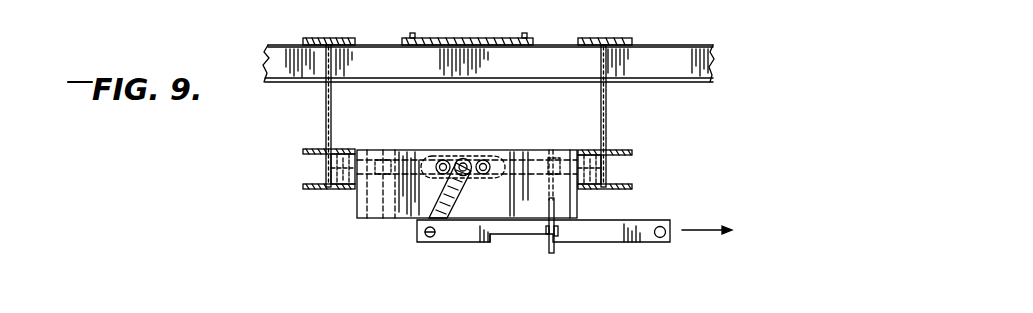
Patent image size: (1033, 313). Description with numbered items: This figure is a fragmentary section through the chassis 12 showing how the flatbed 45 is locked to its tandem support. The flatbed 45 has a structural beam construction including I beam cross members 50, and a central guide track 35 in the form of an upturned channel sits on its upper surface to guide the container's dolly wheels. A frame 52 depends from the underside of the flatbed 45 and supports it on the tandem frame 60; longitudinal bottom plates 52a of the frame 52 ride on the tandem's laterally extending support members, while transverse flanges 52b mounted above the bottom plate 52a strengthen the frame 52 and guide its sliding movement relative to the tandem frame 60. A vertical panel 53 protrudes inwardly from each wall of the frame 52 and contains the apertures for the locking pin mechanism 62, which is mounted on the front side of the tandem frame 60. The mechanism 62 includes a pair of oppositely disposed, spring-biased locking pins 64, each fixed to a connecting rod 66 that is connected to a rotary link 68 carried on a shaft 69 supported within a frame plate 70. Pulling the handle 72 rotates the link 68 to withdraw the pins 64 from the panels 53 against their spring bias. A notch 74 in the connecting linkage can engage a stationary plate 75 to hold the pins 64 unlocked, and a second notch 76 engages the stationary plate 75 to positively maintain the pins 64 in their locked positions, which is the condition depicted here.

The chassis 12 is at (690, 83).
The flatbed 45 is at (280, 44).
The central guide track 35 is at (517, 40).
The I beam cross member 50 is at (600, 62).
The frame 52 is at (606, 105).
The bottom plate 52a is at (619, 190).
The transverse flange 52b is at (608, 150).
The vertical panel 53 is at (600, 169).
The tandem frame 60 is at (356, 210).
The locking pin mechanism 62 is at (408, 244).
The locking pin 64 is at (582, 156).
The connecting rod 66 is at (511, 156).
The rotary link 68 is at (487, 146).
The shaft 69 is at (456, 186).
The frame plate 70 is at (394, 220).
The handle 72 is at (662, 238).
The notch 74 is at (490, 240).
The stationary plate 75 is at (550, 254).
The second notch 76 is at (556, 236).